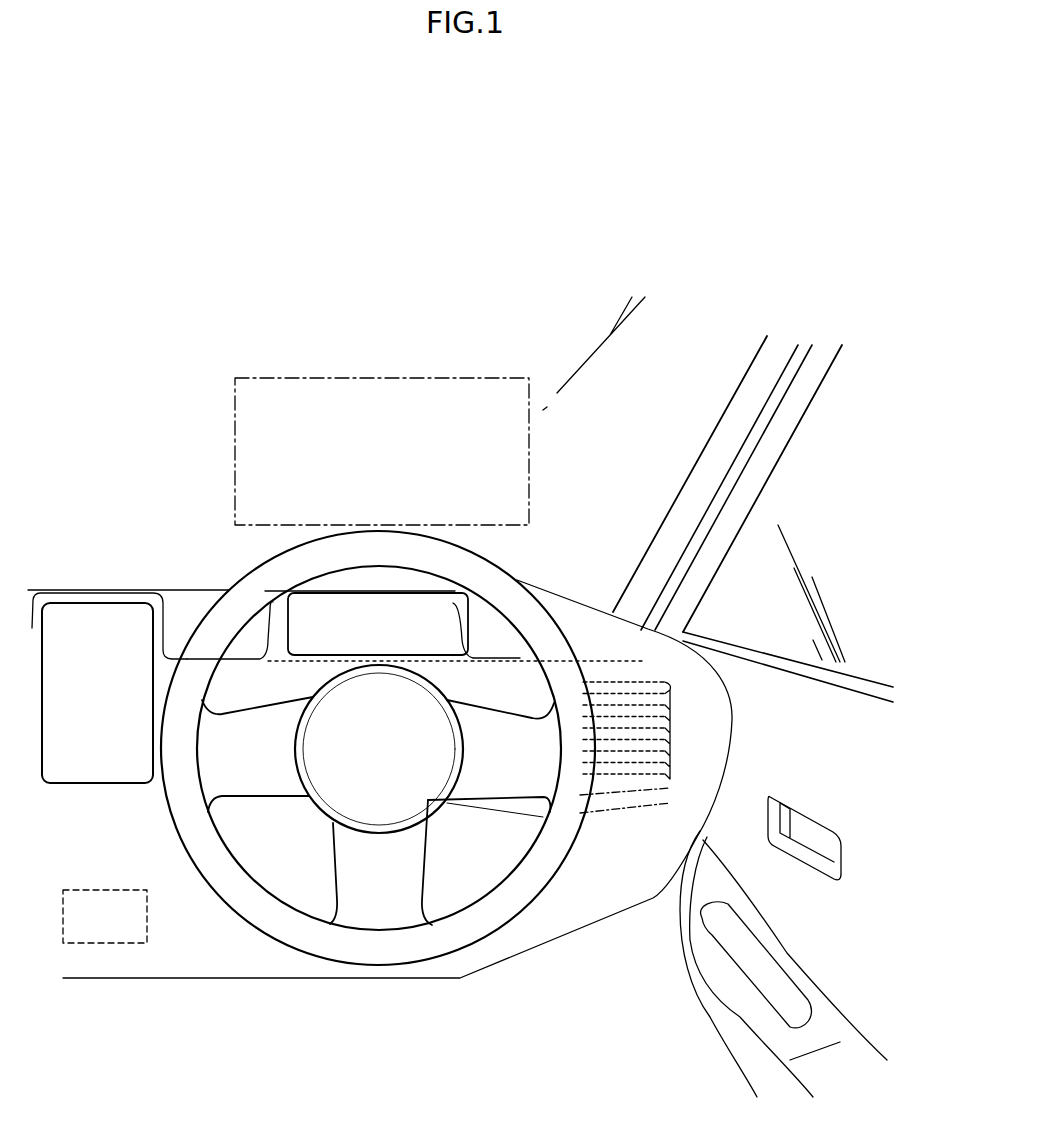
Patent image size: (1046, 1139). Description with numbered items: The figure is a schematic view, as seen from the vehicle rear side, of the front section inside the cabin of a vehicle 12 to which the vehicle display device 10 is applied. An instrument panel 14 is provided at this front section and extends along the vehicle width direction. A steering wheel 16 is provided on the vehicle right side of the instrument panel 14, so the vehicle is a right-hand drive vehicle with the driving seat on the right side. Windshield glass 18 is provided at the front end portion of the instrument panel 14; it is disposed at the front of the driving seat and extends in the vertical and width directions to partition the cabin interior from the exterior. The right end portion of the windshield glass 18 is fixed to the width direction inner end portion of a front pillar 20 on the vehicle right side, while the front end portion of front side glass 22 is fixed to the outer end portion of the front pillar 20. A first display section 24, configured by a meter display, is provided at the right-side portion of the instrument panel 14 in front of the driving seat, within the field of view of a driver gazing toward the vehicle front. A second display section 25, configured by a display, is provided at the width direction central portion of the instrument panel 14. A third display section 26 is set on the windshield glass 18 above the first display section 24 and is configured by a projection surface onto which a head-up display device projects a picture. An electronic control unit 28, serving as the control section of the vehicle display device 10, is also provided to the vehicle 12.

The vehicle display device 10 is at (327, 333).
The vehicle 12 is at (365, 237).
The instrument panel 14 is at (579, 934).
The steering wheel 16 is at (570, 600).
The windshield glass 18 is at (665, 460).
The front pillar 20 is at (740, 393).
The front side glass 22 is at (863, 628).
The first display section 24 is at (317, 618).
The second display section 25 is at (100, 765).
The third display section 26 is at (382, 377).
The electronic control unit (ECU) 28 is at (97, 945).